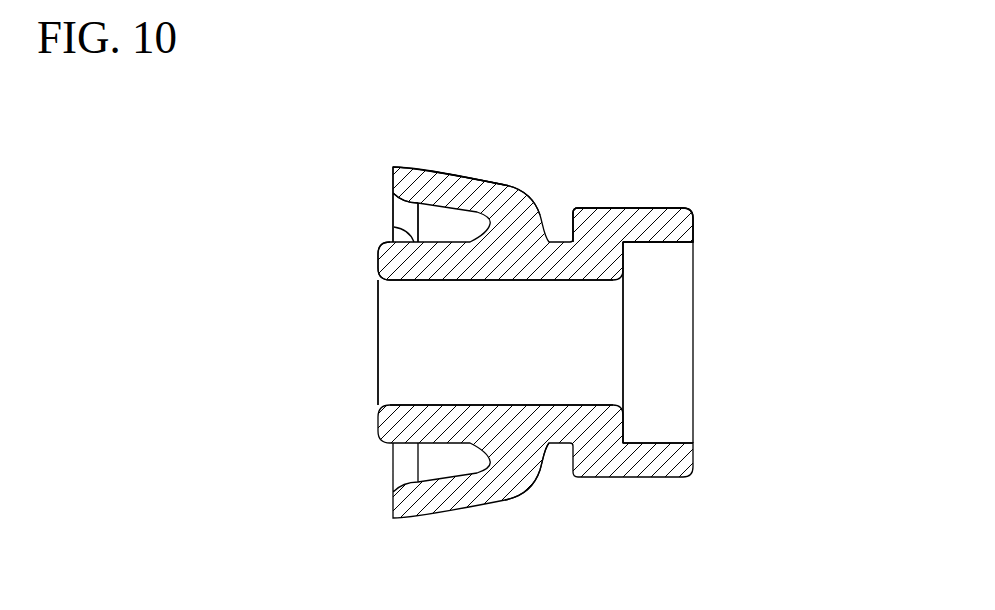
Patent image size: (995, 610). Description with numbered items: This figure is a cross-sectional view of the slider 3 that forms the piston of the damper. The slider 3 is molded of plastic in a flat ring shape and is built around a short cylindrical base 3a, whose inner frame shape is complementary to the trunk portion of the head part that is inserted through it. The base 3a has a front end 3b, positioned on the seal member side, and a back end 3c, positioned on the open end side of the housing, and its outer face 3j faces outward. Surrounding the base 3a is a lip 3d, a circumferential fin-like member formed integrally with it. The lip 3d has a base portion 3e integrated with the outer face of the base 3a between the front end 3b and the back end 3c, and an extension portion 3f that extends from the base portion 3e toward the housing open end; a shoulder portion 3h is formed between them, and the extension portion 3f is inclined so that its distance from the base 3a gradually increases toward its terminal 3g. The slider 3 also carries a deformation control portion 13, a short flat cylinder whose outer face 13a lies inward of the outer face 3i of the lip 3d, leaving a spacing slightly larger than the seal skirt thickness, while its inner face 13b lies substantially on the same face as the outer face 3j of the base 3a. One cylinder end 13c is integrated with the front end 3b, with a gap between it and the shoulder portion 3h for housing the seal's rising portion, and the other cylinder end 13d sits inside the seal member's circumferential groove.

The slider 3 is at (711, 185).
The base 3a is at (428, 288).
The front end 3b is at (624, 272).
The back end 3c is at (378, 265).
The lip 3d is at (468, 182).
The base portion 3e is at (535, 188).
The extension portion 3f is at (492, 185).
The terminal 3g is at (391, 183).
The shoulder portion 3h is at (538, 465).
The outer face of lip 3i is at (427, 170).
The outer face of base 3j is at (392, 224).
The deformation control portion 13 is at (692, 215).
The outer face of deformation control portion 13a is at (641, 207).
The inner face of deformation control portion 13b is at (655, 245).
The one cylinder end 13c is at (587, 207).
The another cylinder end 13d is at (697, 234).